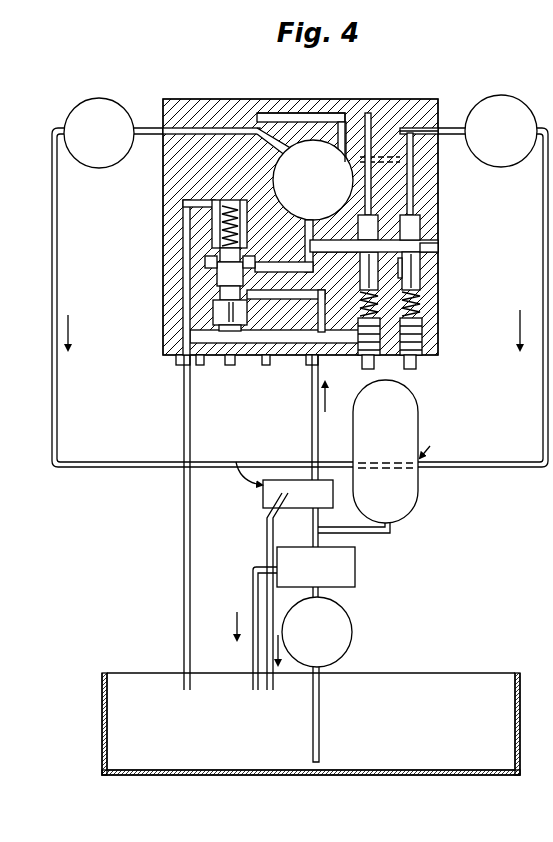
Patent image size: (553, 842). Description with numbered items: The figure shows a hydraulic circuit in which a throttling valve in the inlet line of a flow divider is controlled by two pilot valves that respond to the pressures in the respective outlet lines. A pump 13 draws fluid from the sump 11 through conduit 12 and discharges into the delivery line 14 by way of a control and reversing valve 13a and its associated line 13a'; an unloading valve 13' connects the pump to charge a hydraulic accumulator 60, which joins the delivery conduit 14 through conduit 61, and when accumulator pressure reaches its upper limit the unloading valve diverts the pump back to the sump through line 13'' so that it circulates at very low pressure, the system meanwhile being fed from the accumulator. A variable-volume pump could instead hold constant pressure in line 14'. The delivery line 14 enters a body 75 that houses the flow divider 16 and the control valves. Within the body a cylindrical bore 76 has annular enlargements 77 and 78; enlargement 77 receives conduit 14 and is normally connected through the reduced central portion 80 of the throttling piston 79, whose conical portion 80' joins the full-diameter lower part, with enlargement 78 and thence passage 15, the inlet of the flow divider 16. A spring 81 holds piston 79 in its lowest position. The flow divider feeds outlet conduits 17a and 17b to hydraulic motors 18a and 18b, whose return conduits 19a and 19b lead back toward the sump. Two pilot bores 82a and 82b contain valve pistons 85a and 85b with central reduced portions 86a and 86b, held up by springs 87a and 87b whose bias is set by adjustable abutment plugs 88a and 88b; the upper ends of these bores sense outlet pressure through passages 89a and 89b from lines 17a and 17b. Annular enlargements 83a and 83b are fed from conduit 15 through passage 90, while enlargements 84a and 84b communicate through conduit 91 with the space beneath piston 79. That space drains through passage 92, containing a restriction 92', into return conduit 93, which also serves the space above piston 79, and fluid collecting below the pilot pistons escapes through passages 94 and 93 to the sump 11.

The sump 11 is at (102, 712).
The conduit 12 is at (321, 682).
The pump 13 is at (334, 632).
The unloading valve 13' is at (316, 572).
The line 13'' is at (244, 628).
The control and reversing valve 13a is at (259, 472).
The return line from control and reversing valve 13a' is at (255, 591).
The delivery line 14 is at (298, 417).
The line 14' is at (297, 527).
The conduit 15 is at (305, 224).
The flow divider 16 is at (312, 140).
The outlet conduit 17a is at (147, 128).
The outlet conduit 17b is at (455, 128).
The hydraulic motor 18a is at (100, 98).
The hydraulic motor 18b is at (507, 95).
The return conduit 19a is at (54, 410).
The return conduit 19b is at (546, 372).
The hydraulic accumulator 60 is at (419, 392).
The conduit 61 is at (388, 535).
The body 75 is at (355, 98).
The cylindrical bore 76 is at (213, 323).
The annular enlargement 77 is at (213, 311).
The annular enlargement 78 is at (217, 268).
The piston 79 is at (212, 224).
The reduced central portion 80 is at (188, 275).
The conical portion 80' is at (180, 301).
The spring 81 is at (212, 205).
The cylindrical bore 82a is at (420, 222).
The cylindrical bore 82b is at (420, 248).
The annular enlargement 83a is at (358, 228).
The annular enlargement 83b is at (422, 256).
The annular enlargement 84a is at (318, 293).
The annular enlargement 84b is at (380, 270).
The valve piston 85a is at (378, 216).
The valve piston 85b is at (420, 232).
The central reduced portion 86a is at (380, 283).
The central reduced portion 86b is at (420, 266).
The spring 87a is at (406, 362).
The spring 87b is at (422, 312).
The adjustable spring abutment plug 88a is at (362, 362).
The adjustable spring abutment plug 88b is at (422, 335).
The passage 89a is at (275, 113).
The passage 89b is at (412, 185).
The passage 90 is at (313, 247).
The conduit 91 is at (278, 360).
The passage 92 is at (224, 381).
The restriction 92' is at (210, 371).
The return conduit 93 is at (184, 392).
The passage 94 is at (259, 360).